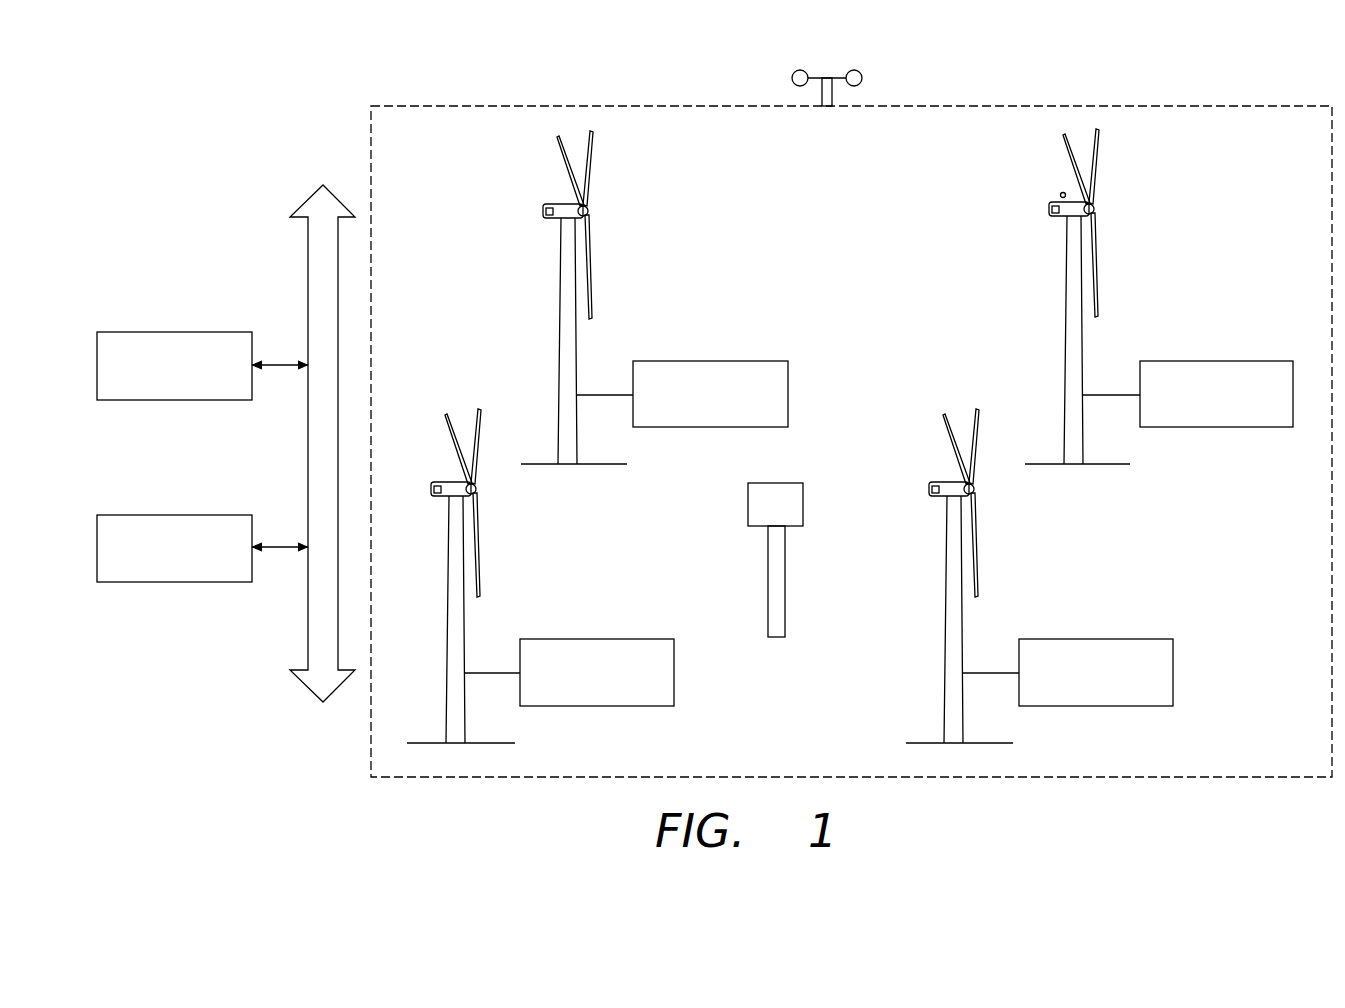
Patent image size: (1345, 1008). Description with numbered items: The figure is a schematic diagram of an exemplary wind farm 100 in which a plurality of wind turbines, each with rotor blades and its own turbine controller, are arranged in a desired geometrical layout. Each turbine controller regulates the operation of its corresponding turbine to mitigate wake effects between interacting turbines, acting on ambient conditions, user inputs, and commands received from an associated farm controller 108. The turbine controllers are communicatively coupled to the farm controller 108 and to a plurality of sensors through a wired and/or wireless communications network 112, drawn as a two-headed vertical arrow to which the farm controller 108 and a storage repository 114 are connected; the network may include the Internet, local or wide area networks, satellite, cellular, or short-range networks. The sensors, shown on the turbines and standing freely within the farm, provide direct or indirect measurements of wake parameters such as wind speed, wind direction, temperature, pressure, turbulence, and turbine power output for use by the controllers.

The wind farm 100 is at (756, 438).
The farm controller 108 is at (155, 515).
The communications network 112 is at (308, 288).
The storage repository 114 is at (155, 332).